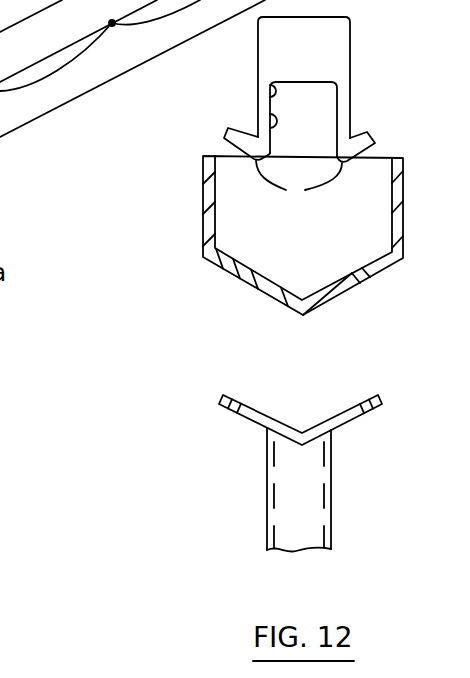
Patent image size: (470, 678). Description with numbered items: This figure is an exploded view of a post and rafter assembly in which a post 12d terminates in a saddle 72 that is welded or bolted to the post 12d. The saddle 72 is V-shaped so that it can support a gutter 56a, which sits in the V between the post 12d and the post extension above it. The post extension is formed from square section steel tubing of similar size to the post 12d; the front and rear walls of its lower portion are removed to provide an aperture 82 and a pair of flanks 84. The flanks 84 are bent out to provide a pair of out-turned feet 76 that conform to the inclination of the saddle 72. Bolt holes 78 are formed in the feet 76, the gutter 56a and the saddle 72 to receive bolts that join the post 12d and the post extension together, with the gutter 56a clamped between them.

The out-turned feet 76 is at (299, 120).
The aperture 82 is at (271, 96).
The flanks 84 is at (264, 128).
The V-shaped channel 56a is at (207, 264).
The bolt holes 78 is at (360, 287).
The saddle 72 is at (253, 420).
The post 12d is at (307, 542).